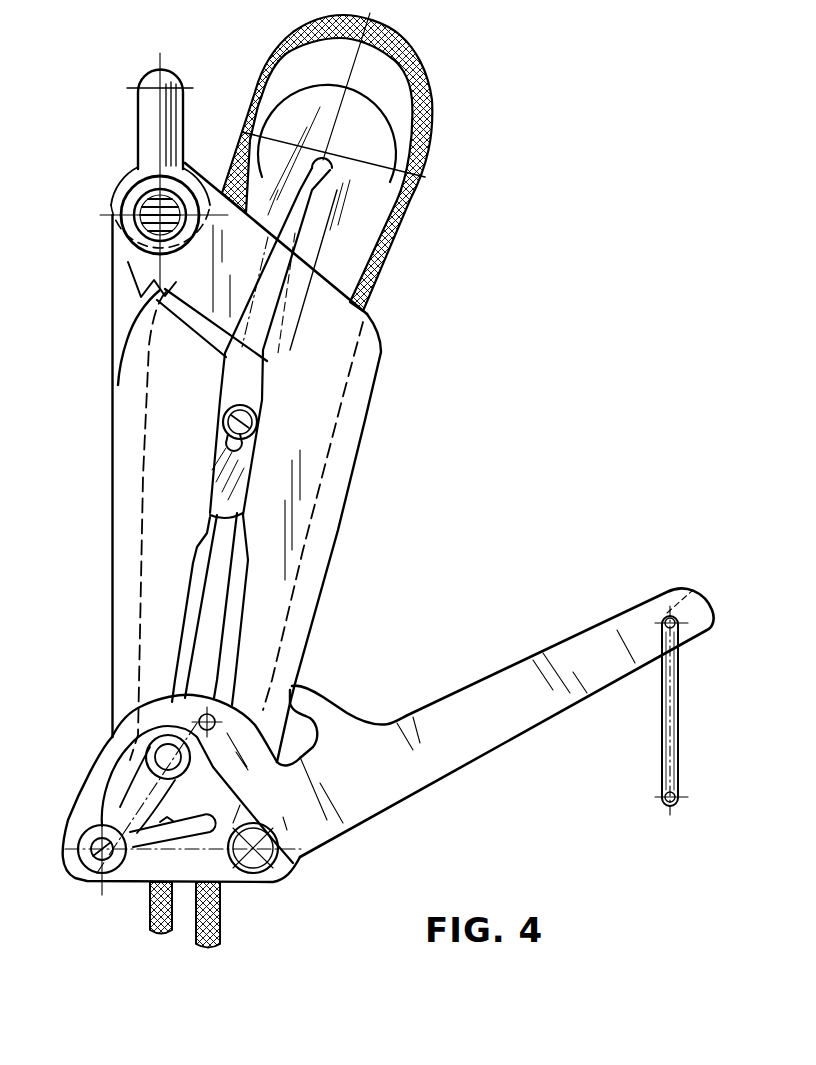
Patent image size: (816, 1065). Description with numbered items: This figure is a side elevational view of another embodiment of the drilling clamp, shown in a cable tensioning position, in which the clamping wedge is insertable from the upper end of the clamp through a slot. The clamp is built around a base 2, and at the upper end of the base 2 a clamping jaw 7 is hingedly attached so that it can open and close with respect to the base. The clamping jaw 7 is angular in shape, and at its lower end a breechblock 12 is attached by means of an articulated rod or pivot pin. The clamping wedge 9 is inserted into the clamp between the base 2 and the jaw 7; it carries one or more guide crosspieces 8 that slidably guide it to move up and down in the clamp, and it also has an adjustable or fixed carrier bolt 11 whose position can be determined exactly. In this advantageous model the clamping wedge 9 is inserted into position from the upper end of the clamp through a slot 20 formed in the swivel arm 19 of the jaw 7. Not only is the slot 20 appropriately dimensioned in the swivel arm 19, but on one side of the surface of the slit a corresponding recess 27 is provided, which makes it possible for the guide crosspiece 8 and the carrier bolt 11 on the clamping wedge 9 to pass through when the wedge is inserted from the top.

The base 2 is at (128, 287).
The clamping jaw 7 is at (327, 516).
The guide crosspiece 8 is at (335, 171).
The clamping wedge 9 is at (367, 143).
The carrier bolt 11 is at (258, 431).
The breechblock 12 is at (478, 748).
The swivel arm 19 is at (307, 323).
The slot 20 is at (318, 275).
The recess 27 is at (310, 262).